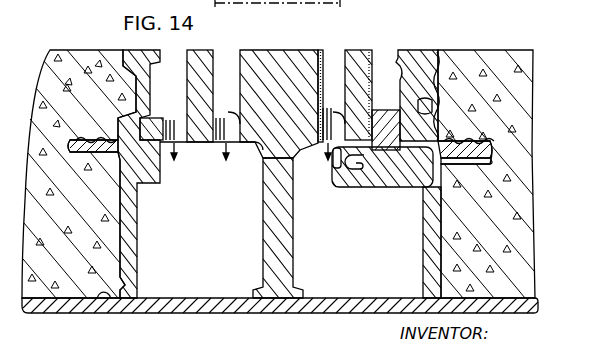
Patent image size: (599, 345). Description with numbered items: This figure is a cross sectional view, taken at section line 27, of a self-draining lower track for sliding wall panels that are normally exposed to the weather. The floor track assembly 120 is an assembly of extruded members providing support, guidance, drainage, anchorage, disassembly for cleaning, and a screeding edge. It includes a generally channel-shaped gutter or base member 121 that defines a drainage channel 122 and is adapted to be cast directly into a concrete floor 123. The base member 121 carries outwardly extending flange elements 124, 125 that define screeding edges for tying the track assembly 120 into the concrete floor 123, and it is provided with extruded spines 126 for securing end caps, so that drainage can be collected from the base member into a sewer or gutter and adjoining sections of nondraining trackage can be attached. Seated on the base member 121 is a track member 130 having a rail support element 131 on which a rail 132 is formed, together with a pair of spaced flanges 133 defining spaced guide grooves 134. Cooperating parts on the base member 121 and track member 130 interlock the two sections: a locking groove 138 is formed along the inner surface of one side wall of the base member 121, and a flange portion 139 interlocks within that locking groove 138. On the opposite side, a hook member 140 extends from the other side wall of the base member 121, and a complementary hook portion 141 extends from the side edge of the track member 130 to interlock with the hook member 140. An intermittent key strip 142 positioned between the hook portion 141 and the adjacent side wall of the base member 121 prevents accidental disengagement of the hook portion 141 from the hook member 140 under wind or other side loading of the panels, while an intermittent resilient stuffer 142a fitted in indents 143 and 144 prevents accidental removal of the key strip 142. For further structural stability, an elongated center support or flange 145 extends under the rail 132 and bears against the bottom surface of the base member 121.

The section line 27 is at (280, 3).
The floor track assembly 120 is at (231, 340).
The base member 121 is at (118, 253).
The drainage channel 122 is at (210, 276).
The concrete floor 123 is at (90, 212).
The flange element 124 is at (87, 140).
The flange element 125 is at (71, 310).
The extruded spine 126 is at (148, 178).
The track member 130 is at (385, 53).
The rail support element 131 is at (150, 122).
The rail 132 is at (312, 48).
The flange 133 is at (205, 49).
The guide groove 134 is at (232, 62).
The locking groove 138 is at (117, 111).
The flange portion 139 is at (175, 148).
The hook member 140 is at (382, 178).
The hook portion 141 is at (358, 182).
The key strip 142 is at (442, 160).
The resilient stuffer 142a is at (424, 106).
The indent 143 is at (395, 118).
The indent 144 is at (427, 85).
The center support 145 is at (283, 267).